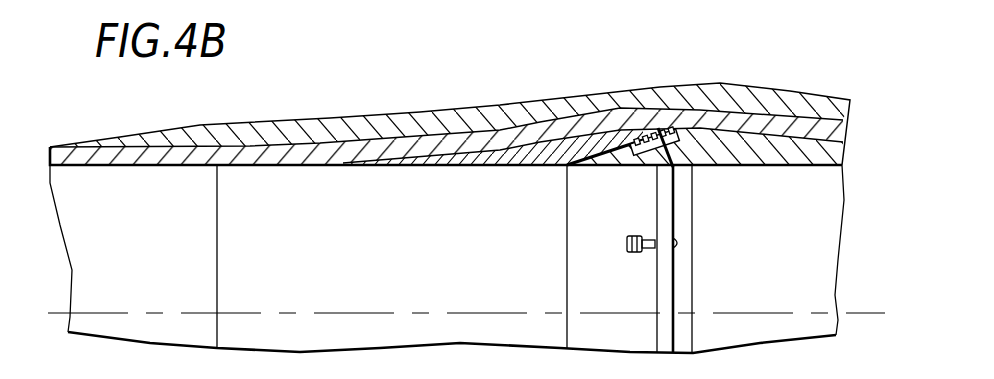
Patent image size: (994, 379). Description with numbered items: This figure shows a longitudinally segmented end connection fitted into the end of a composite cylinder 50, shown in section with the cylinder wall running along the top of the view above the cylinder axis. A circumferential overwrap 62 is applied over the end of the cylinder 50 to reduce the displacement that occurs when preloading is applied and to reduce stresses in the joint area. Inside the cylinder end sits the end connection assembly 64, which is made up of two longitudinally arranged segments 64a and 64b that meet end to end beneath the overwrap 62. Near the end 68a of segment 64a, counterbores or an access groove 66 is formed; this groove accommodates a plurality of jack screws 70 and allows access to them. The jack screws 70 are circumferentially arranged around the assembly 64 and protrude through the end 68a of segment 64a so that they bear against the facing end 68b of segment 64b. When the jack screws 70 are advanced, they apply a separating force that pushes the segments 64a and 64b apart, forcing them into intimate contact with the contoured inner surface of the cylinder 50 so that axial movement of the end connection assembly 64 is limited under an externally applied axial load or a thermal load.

The composite cylinder 50 is at (68, 147).
The circumferential overwrap 62 is at (312, 127).
The end connection assembly 64 is at (590, 130).
The segment 64a is at (557, 148).
The segment 64b is at (758, 143).
The access groove 66 is at (578, 183).
The end of segment 64a 68a is at (675, 130).
The end of segment 64b 68b is at (677, 152).
The jack screws 70 is at (637, 165).